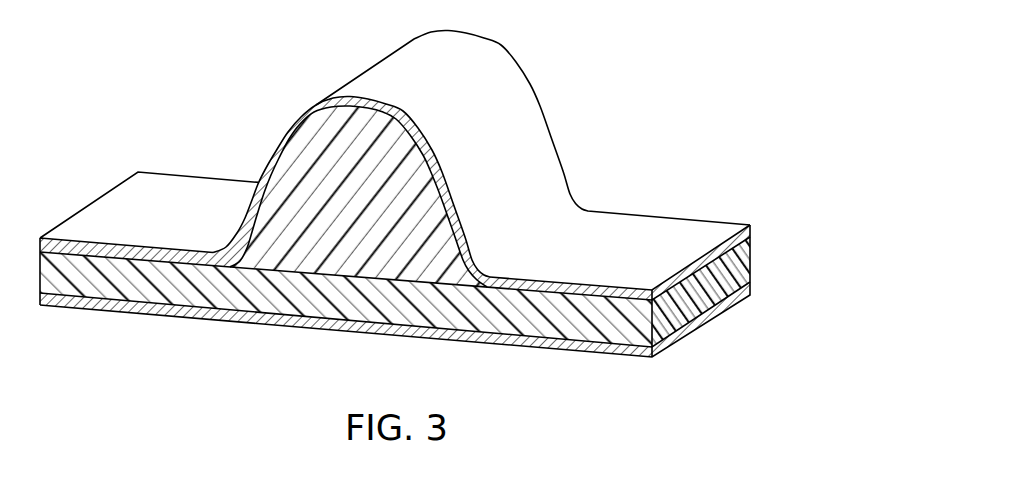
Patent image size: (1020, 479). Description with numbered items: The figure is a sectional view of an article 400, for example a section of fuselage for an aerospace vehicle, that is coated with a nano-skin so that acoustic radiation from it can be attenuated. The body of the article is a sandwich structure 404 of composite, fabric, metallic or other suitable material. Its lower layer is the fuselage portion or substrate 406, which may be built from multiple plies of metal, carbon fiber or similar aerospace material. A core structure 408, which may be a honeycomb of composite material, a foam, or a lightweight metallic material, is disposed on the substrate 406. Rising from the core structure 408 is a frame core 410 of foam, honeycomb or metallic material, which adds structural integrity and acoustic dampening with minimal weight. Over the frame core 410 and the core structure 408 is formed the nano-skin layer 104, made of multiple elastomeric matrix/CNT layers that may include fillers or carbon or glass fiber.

The article 400 is at (435, 210).
The nano-skin layer 104 is at (751, 229).
The core structure 408 is at (752, 261).
The substrate 406 is at (585, 353).
The sandwich structure 404 is at (435, 249).
The frame core 410 is at (258, 242).